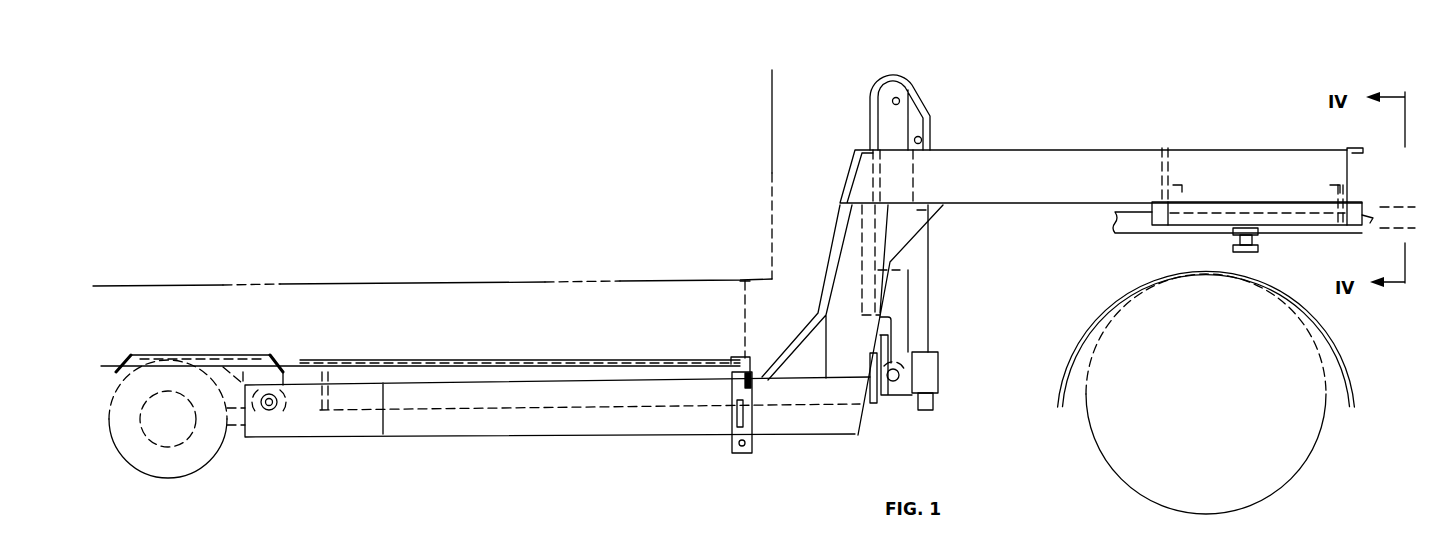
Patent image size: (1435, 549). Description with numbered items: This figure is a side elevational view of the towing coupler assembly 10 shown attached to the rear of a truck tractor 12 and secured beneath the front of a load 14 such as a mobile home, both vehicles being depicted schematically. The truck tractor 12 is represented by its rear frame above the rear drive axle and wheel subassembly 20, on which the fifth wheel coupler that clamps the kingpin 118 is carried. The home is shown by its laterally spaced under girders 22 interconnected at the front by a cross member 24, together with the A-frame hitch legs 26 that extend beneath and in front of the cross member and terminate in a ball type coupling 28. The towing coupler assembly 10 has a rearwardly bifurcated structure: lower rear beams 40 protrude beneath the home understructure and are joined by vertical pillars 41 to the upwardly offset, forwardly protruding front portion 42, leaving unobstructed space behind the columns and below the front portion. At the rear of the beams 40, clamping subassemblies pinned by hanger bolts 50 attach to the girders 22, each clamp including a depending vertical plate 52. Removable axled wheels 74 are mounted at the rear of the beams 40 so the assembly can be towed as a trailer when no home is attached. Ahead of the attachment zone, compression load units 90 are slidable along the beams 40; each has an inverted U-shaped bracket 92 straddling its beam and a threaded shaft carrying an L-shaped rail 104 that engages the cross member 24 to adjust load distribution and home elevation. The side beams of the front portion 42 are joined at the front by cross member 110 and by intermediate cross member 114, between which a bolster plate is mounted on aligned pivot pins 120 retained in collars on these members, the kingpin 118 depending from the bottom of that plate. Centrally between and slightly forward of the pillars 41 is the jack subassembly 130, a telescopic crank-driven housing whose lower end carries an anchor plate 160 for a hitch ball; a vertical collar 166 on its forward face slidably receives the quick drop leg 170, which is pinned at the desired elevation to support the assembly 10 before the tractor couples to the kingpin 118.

The towing coupler assembly 10 is at (1040, 122).
The truck tractor 12 is at (1405, 200).
The load 14 is at (782, 78).
The rear drive axle and wheel subassembly 20 is at (1310, 452).
The under girders 22 is at (410, 303).
The cross member 24 is at (748, 315).
The legs 26 is at (572, 372).
The ball type coupling 28 is at (932, 347).
The beams 40 is at (662, 422).
The vertical pillars 41 is at (835, 262).
The front portion 42 is at (1076, 145).
The hanger bolts 50 is at (269, 411).
The vertical plate 52 is at (293, 368).
The axled wheels 74 is at (167, 465).
The compression load units 90 is at (762, 386).
The U-shaped bracket 92 is at (748, 440).
The L-shaped rail 104 is at (749, 358).
The cross member 110 is at (1353, 168).
The intermediate cross member 114 is at (1170, 157).
The kingpin 118 is at (1259, 244).
The pivot pins 120 is at (1357, 199).
The jack subassembly 130 is at (934, 96).
The anchor plate 160 is at (889, 398).
The vertical collar 166 is at (938, 372).
The quick drop leg 170 is at (930, 314).